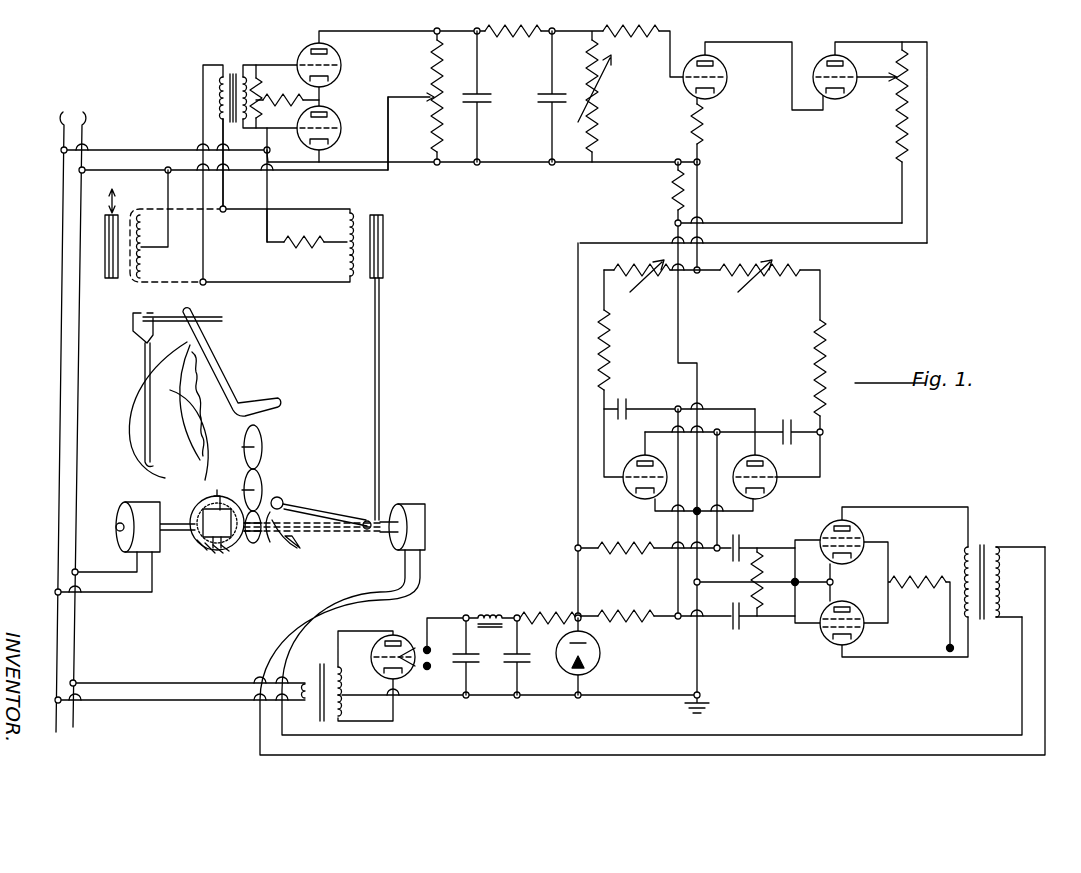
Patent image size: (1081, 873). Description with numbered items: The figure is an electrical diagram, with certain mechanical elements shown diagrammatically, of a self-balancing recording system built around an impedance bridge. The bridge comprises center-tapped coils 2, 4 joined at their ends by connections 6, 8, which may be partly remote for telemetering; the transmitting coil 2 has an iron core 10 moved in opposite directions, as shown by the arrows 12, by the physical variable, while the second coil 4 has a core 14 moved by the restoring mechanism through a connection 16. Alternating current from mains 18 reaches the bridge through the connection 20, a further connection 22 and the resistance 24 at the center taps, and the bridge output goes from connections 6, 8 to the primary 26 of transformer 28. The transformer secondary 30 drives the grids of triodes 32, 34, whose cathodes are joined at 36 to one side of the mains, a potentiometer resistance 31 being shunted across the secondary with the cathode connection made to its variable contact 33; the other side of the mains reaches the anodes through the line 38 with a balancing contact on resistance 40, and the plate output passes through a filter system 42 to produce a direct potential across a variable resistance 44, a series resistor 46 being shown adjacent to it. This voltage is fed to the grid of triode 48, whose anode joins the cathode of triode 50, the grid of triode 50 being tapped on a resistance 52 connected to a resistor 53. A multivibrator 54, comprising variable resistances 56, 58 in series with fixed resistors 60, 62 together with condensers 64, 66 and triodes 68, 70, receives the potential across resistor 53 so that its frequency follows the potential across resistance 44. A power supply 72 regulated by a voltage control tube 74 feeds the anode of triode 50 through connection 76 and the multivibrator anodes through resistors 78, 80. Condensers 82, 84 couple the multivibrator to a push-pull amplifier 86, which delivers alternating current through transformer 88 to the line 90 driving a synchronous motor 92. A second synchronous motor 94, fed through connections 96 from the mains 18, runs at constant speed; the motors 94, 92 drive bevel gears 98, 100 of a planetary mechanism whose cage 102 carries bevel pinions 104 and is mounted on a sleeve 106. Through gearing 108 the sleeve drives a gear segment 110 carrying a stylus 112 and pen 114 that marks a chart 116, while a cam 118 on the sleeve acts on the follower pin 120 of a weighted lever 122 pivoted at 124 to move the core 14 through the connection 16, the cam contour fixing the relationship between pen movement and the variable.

The center-tapped coil 2 is at (150, 252).
The center-tapped coil 4 is at (347, 262).
The connection 6 is at (226, 208).
The connection 8 is at (262, 284).
The iron core 10 is at (107, 262).
The arrows 12 is at (116, 202).
The core 14 is at (384, 242).
The connection 16 is at (380, 402).
The alternating current supply mains 18 is at (71, 411).
The connection 20 is at (174, 233).
The conductor 22 is at (267, 232).
The resistance 24 is at (318, 237).
The transformer primary 26 is at (219, 103).
The transformer 28 is at (235, 64).
The transformer secondary 30 is at (249, 76).
The potentiometer resistance 31 is at (262, 94).
The triode 32 is at (340, 73).
The variable contact 33 is at (270, 158).
The triode 34 is at (340, 136).
The cathode junction 36 is at (270, 188).
The line 38 is at (386, 172).
The resistance 40 is at (433, 92).
The filter system 42 is at (526, 155).
The variable resistance 44 is at (597, 104).
The resistor 46 is at (642, 35).
The triode 48 is at (693, 61).
The triode 50 is at (822, 61).
The resistance 52 is at (900, 134).
The resistor 53 is at (675, 198).
The multivibrator 54 is at (895, 283).
The variable resistance 56 is at (642, 287).
The variable resistance 58 is at (760, 287).
The fixed resistor 60 is at (608, 360).
The fixed resistor 62 is at (815, 380).
The condenser 64 is at (628, 405).
The condenser 66 is at (782, 432).
The triode 68 is at (626, 491).
The triode 70 is at (762, 494).
The power supply 72 is at (424, 609).
The voltage control tube 74 is at (599, 670).
The connection 76 is at (577, 446).
The resistor 78 is at (656, 556).
The resistor 80 is at (656, 624).
The condenser 82 is at (776, 541).
The condenser 84 is at (741, 623).
The push-pull amplifier 86 is at (828, 511).
The transformer 88 is at (990, 541).
The line 90 is at (282, 634).
The synchronous motor 92 is at (426, 520).
The synchronous motor 94 is at (124, 540).
The connections 96 is at (118, 593).
The bevel gear 98 is at (192, 541).
The bevel gear 100 is at (250, 549).
The cage 102 is at (222, 551).
The bevel pinions 104 is at (195, 575).
The sleeve 106 is at (284, 551).
The gearing 108 is at (290, 470).
The gear segment 110 is at (229, 372).
The stylus 112 is at (145, 362).
The pen 114 is at (160, 470).
The chart 116 is at (145, 410).
The cam 118 is at (299, 547).
The follower pin 120 is at (283, 502).
The weighted lever 122 is at (367, 530).
The pivot 124 is at (322, 511).